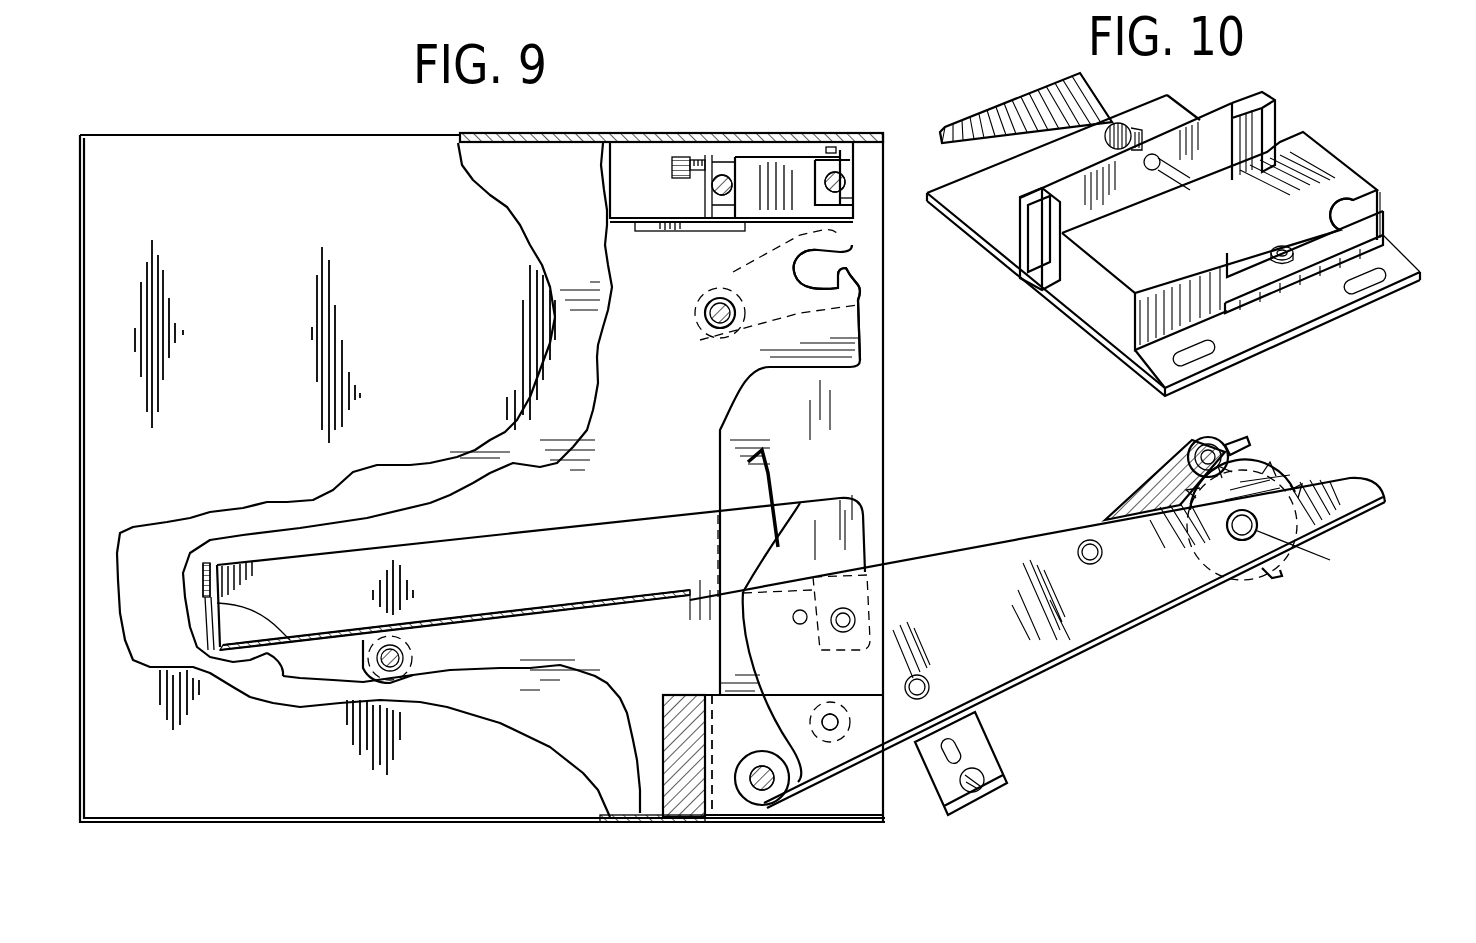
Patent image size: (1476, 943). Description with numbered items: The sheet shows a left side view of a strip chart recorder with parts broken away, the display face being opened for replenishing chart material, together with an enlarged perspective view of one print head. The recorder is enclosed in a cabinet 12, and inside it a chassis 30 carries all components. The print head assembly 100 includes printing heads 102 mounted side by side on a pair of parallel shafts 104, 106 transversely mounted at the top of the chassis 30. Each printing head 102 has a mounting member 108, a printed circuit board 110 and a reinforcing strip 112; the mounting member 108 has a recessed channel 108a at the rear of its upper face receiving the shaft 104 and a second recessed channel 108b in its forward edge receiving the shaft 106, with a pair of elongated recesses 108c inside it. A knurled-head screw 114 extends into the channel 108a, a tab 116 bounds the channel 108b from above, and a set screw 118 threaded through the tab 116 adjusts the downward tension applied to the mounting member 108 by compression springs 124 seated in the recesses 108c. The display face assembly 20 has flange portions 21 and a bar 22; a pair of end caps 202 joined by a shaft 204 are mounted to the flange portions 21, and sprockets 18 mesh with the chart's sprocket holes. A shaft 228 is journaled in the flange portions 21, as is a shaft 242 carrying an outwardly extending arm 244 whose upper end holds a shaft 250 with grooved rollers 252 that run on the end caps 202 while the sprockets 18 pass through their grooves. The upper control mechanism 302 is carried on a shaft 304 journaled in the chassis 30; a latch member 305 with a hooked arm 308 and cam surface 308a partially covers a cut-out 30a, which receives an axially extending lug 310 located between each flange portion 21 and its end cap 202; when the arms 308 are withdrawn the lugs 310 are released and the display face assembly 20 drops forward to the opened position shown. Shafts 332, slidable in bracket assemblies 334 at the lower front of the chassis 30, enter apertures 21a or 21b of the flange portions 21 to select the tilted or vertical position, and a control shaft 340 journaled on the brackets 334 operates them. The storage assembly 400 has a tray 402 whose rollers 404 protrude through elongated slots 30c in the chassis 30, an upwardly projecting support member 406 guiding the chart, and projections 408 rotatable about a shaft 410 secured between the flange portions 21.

In FIG. 9, the housing or cabinet 12 is at (354, 122).
In FIG. 9, the sprockets 18 is at (1274, 580).
In FIG. 9, the display face assembly 20 is at (1145, 632).
In FIG. 9, the flange portions 21 is at (1052, 642).
In FIG. 9, the aperture 21a is at (797, 624).
In FIG. 9, the aperture 21b is at (820, 722).
In FIG. 9, the bar 22 is at (992, 795).
In FIG. 9, the chassis or frame 30 is at (590, 412).
In FIG. 9, the cut out opening 30a is at (840, 252).
In FIG. 9, the elongated slots 30c is at (283, 676).
In FIG. 9, the print head assembly 100 is at (762, 174).
In FIG. 9, the printing heads 102 is at (760, 145).
In FIG. 10, the printing heads 102 is at (1177, 231).
In FIG. 9, the shaft 104 is at (715, 188).
In FIG. 9, the shaft 106 is at (825, 182).
In FIG. 10, the mounting member 108 is at (1345, 178).
In FIG. 10, the recessed channel 108a is at (1228, 128).
In FIG. 10, the recessed channel 108b is at (1140, 355).
In FIG. 10, the elongated recesses 108c is at (1358, 288).
In FIG. 10, the printed circuit board 110 is at (1172, 112).
In FIG. 9, the reinforcing strip 112 is at (706, 231).
In FIG. 10, the reinforcing strip 112 is at (1022, 302).
In FIG. 9, the screw with knurled head 114 is at (680, 155).
In FIG. 10, the screw with knurled head 114 is at (1120, 122).
In FIG. 9, the tab 116 is at (850, 150).
In FIG. 10, the tab 116 is at (1342, 237).
In FIG. 9, the set screw 118 is at (832, 147).
In FIG. 10, the set screw 118 is at (1005, 112).
In FIG. 9, the compression spring 124 is at (848, 200).
In FIG. 9, the end caps 202 is at (1262, 480).
In FIG. 9, the shaft 204 is at (1235, 538).
In FIG. 9, the shaft 228 is at (925, 680).
In FIG. 9, the shaft 242 is at (1090, 565).
In FIG. 9, the arm 244 is at (1135, 500).
In FIG. 9, the shaft 250 is at (1210, 452).
In FIG. 9, the roller 252 is at (1195, 458).
In FIG. 9, the upper control mechanism 302 is at (715, 276).
In FIG. 9, the shaft 304 is at (708, 316).
In FIG. 9, the latch member 305 is at (862, 316).
In FIG. 9, the hooked arm 308 is at (842, 270).
In FIG. 9, the cam surface 308a is at (862, 292).
In FIG. 9, the lug 310 is at (1300, 556).
In FIG. 9, the shafts 332 is at (836, 714).
In FIG. 9, the bracket assembly 334 is at (740, 818).
In FIG. 9, the control shaft 340 is at (772, 790).
In FIG. 9, the storage assembly 400 is at (508, 528).
In FIG. 9, the tray 402 is at (630, 528).
In FIG. 9, the rollers 404 is at (412, 655).
In FIG. 9, the support member 406 is at (772, 475).
In FIG. 9, the projections 408 is at (880, 600).
In FIG. 9, the shaft 410 is at (843, 632).